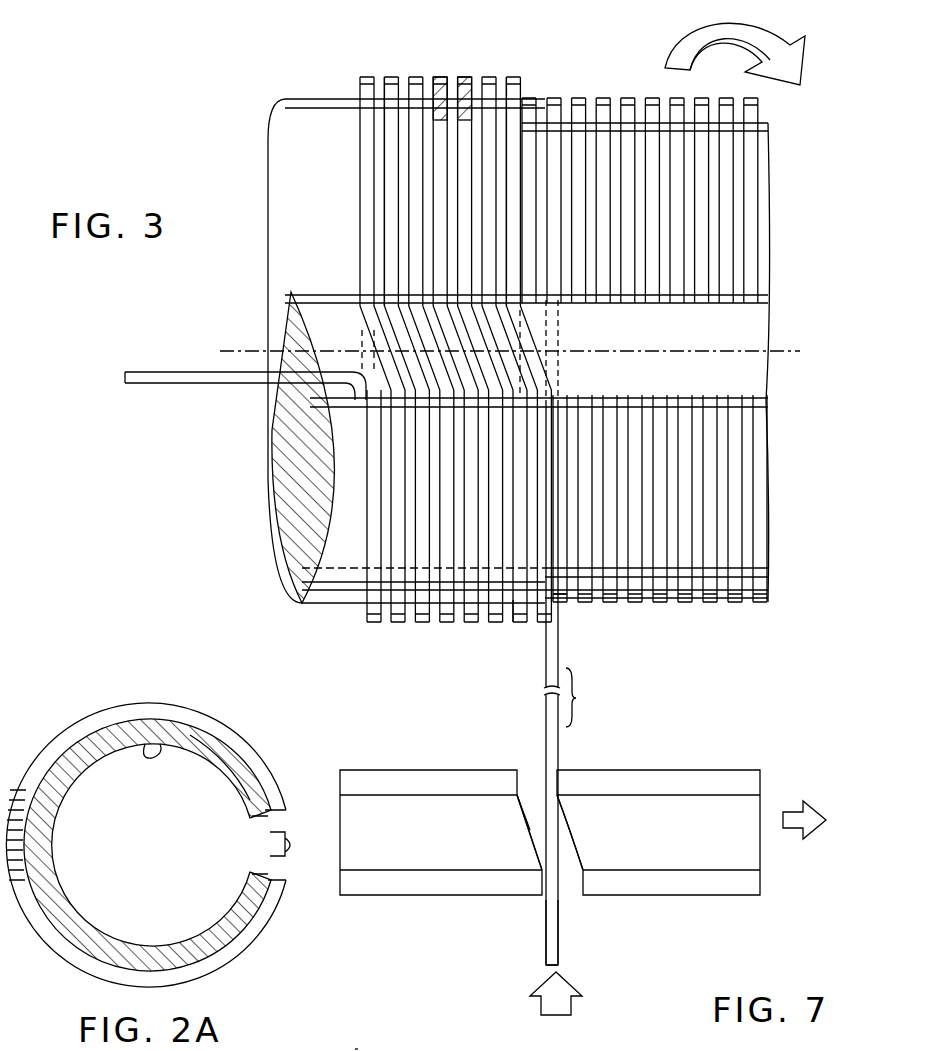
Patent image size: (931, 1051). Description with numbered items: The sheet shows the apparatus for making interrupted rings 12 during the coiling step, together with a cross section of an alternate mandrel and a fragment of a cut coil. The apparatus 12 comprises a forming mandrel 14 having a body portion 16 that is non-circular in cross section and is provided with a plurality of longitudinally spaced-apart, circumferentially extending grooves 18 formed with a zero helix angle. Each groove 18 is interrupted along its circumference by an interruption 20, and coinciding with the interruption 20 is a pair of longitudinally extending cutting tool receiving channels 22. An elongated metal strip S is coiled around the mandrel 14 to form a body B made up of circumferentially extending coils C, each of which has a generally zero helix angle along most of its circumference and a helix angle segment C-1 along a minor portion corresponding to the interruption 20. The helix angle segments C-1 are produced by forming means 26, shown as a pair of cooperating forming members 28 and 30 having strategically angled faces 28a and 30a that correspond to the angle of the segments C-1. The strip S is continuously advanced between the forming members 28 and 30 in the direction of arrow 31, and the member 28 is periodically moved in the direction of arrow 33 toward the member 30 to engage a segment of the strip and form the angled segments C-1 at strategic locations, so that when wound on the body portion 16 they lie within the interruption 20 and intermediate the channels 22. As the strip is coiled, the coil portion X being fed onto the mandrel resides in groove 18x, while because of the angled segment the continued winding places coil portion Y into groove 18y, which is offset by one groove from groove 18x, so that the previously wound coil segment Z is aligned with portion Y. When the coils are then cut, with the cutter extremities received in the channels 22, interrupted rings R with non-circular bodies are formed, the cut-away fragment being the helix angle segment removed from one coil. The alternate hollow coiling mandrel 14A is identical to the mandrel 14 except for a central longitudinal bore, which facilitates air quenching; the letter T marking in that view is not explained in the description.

In FIG. 3, the apparatus for making interrupted rings 12 is at (248, 84).
In FIG. 3, the forming mandrel 14 is at (310, 125).
In FIG. 2A, the hollow coiling mandrel 14A is at (92, 716).
In FIG. 3, the body portion 16 is at (768, 153).
In FIG. 2A, the body portion 16 is at (90, 956).
In FIG. 3, the grooves 18 is at (740, 232).
In FIG. 2A, the grooves 18 is at (212, 732).
In FIG. 3, the groove 18x is at (555, 600).
In FIG. 3, the groove 18y is at (525, 100).
In FIG. 3, the interruption 20 is at (758, 344).
In FIG. 2A, the interruption 20 is at (270, 848).
In FIG. 3, the cutting tool receiving channels 22 is at (740, 305).
In FIG. 2A, the cutting tool receiving channels 22 is at (255, 815).
In FIG. 7, the forming means 26 is at (626, 746).
In FIG. 7, the forming member 28 is at (416, 896).
In FIG. 7, the angled face 28a is at (528, 805).
In FIG. 7, the forming member 30 is at (702, 900).
In FIG. 7, the angled face 30a is at (573, 862).
In FIG. 7, the arrow 31 is at (555, 1015).
In FIG. 7, the arrow 33 is at (518, 830).
In FIG. 3, the metal strip S is at (134, 370).
In FIG. 7, the metal strip S is at (545, 946).
In FIG. 2A, the tab T is at (150, 744).
In FIG. 3, the body B is at (394, 76).
In FIG. 3, the coils C is at (465, 74).
In FIG. 3, the helix angle segment C-1 is at (388, 332).
In FIG. 3, the coil portion X is at (548, 420).
In FIG. 3, the coil portion Y is at (516, 76).
In FIG. 3, the coil segment Z is at (520, 630).
In FIG. 7, the interrupted rings R is at (363, 1041).